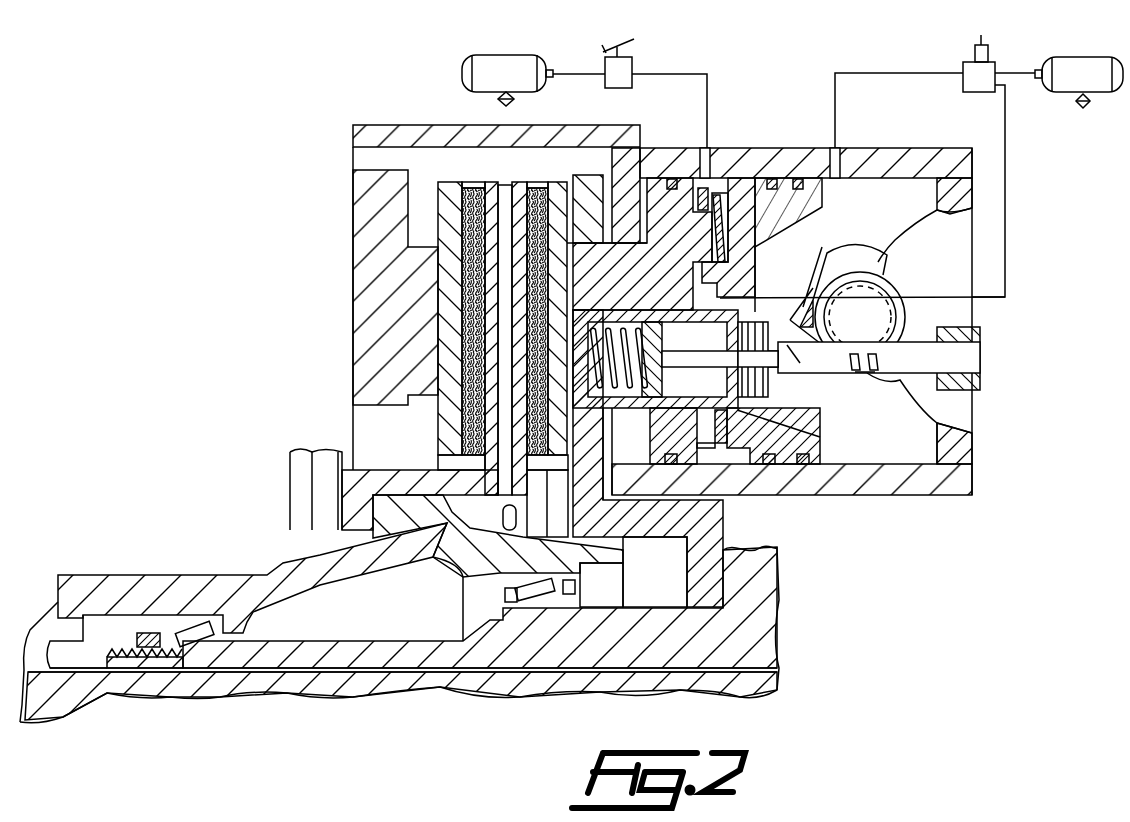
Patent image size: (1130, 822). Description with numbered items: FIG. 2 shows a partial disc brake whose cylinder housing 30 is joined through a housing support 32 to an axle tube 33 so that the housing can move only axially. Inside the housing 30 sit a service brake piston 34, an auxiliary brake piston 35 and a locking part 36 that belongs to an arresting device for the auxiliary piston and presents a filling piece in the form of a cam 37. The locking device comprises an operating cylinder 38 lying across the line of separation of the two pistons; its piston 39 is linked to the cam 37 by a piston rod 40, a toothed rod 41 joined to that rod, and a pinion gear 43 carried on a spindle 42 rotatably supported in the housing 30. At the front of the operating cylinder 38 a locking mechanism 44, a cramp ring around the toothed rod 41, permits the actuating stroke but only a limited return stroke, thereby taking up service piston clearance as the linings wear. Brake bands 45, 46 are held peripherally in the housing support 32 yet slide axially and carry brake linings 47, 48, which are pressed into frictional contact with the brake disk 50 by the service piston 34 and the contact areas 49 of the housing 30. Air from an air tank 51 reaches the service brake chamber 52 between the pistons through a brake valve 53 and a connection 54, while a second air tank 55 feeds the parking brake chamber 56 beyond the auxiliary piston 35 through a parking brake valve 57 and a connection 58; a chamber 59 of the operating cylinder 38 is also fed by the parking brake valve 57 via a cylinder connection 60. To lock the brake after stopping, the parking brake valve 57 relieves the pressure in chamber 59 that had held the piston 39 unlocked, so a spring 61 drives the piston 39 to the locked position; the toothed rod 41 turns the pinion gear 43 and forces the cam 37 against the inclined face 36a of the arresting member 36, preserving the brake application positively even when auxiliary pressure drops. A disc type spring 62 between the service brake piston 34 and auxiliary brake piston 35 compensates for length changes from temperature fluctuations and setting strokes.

The cylinder housing 30 is at (797, 165).
The housing support 32 is at (592, 138).
The axle tube 33 is at (745, 640).
The service brake piston 34 is at (690, 188).
The auxiliary brake piston 35 is at (743, 192).
The locking part 36 is at (812, 252).
The inclined face 36a is at (812, 300).
The cam 37 is at (862, 265).
The operating cylinder 38 is at (637, 398).
The piston 39 is at (653, 380).
The piston rod 40 is at (757, 364).
The toothed rod 41 is at (833, 367).
The spindle 42 is at (887, 317).
The pinion gear 43 is at (892, 292).
The locking mechanism 44 is at (760, 390).
The brake band 45 is at (560, 195).
The brake band 46 is at (451, 200).
The brake lining 47 is at (537, 205).
The brake lining 48 is at (476, 205).
The contact areas 49 is at (438, 312).
The brake disk 50 is at (505, 195).
The air tank 51 is at (506, 66).
The service brake chamber 52 is at (714, 255).
The brake valve 53 is at (625, 70).
The connection 54 is at (715, 180).
The second air tank 55 is at (1084, 66).
The parking brake chamber 56 is at (922, 190).
The parking brake valve 57 is at (963, 68).
The connection 58 is at (836, 152).
The chamber 59 is at (710, 388).
The cylinder connection 60 is at (675, 358).
The spring 61 is at (625, 325).
The disc type spring 62 is at (726, 224).